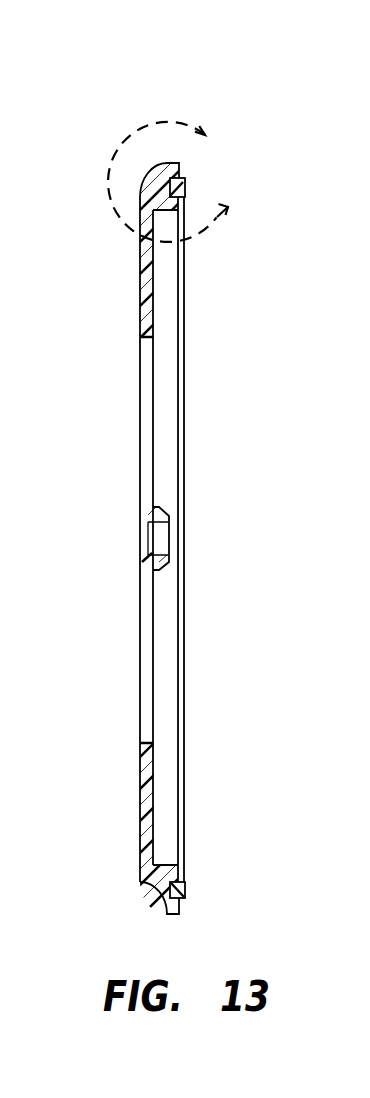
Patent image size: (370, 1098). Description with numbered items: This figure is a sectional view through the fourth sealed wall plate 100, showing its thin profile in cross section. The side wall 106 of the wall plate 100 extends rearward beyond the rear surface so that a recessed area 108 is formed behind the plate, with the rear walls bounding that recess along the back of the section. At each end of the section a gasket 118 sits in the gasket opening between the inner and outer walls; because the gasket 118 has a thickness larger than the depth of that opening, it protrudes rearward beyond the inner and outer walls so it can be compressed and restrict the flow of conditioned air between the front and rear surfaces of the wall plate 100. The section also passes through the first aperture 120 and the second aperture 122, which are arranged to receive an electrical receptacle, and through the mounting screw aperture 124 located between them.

The fourth sealed wall plate 100 is at (152, 108).
The side wall 106 is at (157, 168).
The recessed area 108 is at (152, 323).
The gasket 118 is at (185, 190).
The first aperture 120 is at (142, 338).
The second aperture 122 is at (152, 740).
The mounting screw aperture 124 is at (170, 541).